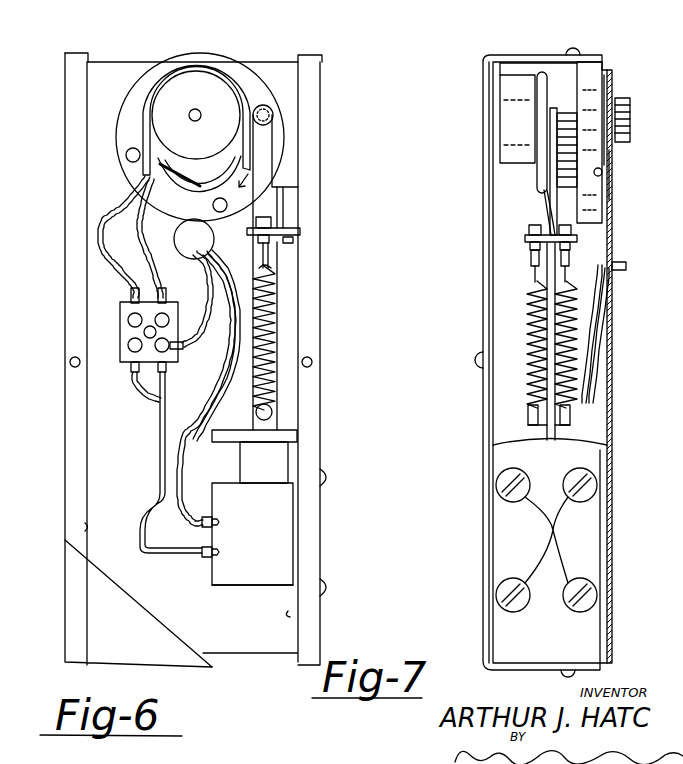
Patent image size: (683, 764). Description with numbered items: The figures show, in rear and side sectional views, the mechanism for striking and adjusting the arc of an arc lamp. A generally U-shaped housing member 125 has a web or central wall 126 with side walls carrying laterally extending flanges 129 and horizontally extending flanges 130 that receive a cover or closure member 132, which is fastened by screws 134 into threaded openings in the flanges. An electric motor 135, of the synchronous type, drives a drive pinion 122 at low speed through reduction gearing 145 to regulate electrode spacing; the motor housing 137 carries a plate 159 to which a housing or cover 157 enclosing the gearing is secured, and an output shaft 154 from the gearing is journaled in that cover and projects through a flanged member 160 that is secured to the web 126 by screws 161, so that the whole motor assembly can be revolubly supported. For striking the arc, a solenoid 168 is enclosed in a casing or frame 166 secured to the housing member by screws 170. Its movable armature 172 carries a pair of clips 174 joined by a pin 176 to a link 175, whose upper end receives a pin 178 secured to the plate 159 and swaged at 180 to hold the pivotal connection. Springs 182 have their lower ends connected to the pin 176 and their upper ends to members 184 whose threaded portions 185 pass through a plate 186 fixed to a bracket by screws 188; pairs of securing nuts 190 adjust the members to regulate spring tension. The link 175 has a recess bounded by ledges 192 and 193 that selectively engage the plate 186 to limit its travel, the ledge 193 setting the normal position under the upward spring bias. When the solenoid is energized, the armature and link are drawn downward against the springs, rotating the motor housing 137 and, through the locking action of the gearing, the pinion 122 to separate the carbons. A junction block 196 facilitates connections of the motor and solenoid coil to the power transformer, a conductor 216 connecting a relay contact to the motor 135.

In FIG. 7, the drive pinion 122 is at (642, 111).
In FIG. 7, the housing member 125 is at (625, 556).
In FIG. 7, the web or central wall portion 126 is at (615, 334).
In FIG. 6, the laterally extending flanges 129 is at (197, 568).
In FIG. 6, the horizontally extending flanges 130 is at (202, 360).
In FIG. 6, the cover or closure member 132 is at (192, 370).
In FIG. 7, the cover or closure member 132 is at (515, 362).
In FIG. 7, the screws 134 is at (519, 360).
In FIG. 6, the electric motor 135 is at (200, 127).
In FIG. 7, the electric motor 135 is at (517, 119).
In FIG. 7, the motor housing 137 is at (530, 54).
In FIG. 6, the reduction gearing 145 is at (196, 133).
In FIG. 7, the reduction gearing 145 is at (528, 212).
In FIG. 7, the output or driven shaft 154 is at (630, 172).
In FIG. 7, the housing or cover 157 is at (606, 129).
In FIG. 7, the plate 159 is at (553, 111).
In FIG. 7, the flanged member 160 is at (621, 180).
In FIG. 7, the screws 161 is at (627, 116).
In FIG. 6, the casing or frame 166 is at (252, 598).
In FIG. 6, the solenoid 168 is at (277, 534).
In FIG. 6, the screws 170 is at (339, 528).
In FIG. 7, the screws 170 is at (546, 540).
In FIG. 6, the core member or armature 172 is at (296, 460).
In FIG. 6, the clips 174 is at (250, 425).
In FIG. 7, the clips 174 is at (533, 428).
In FIG. 6, the link 175 is at (302, 272).
In FIG. 7, the link 175 is at (525, 341).
In FIG. 6, the pin 176 is at (304, 404).
In FIG. 7, the pin 176 is at (586, 412).
In FIG. 6, the pin 178 is at (303, 103).
In FIG. 7, the pin 178 is at (560, 158).
In FIG. 7, the swaged portion 180 is at (524, 132).
In FIG. 6, the springs 182 is at (302, 338).
In FIG. 7, the springs 182 is at (500, 344).
In FIG. 6, the members 184 is at (305, 257).
In FIG. 7, the members 184 is at (546, 259).
In FIG. 6, the threaded portions 185 is at (317, 246).
In FIG. 7, the threaded portions 185 is at (549, 231).
In FIG. 6, the plate 186 is at (304, 222).
In FIG. 6, the screws 188 is at (299, 228).
In FIG. 6, the securing nuts 190 is at (212, 372).
In FIG. 6, the ledge 192 is at (315, 191).
In FIG. 7, the ledge 193 is at (635, 259).
In FIG. 6, the junction block 196 is at (136, 274).
In FIG. 6, the conductor 216 is at (153, 462).